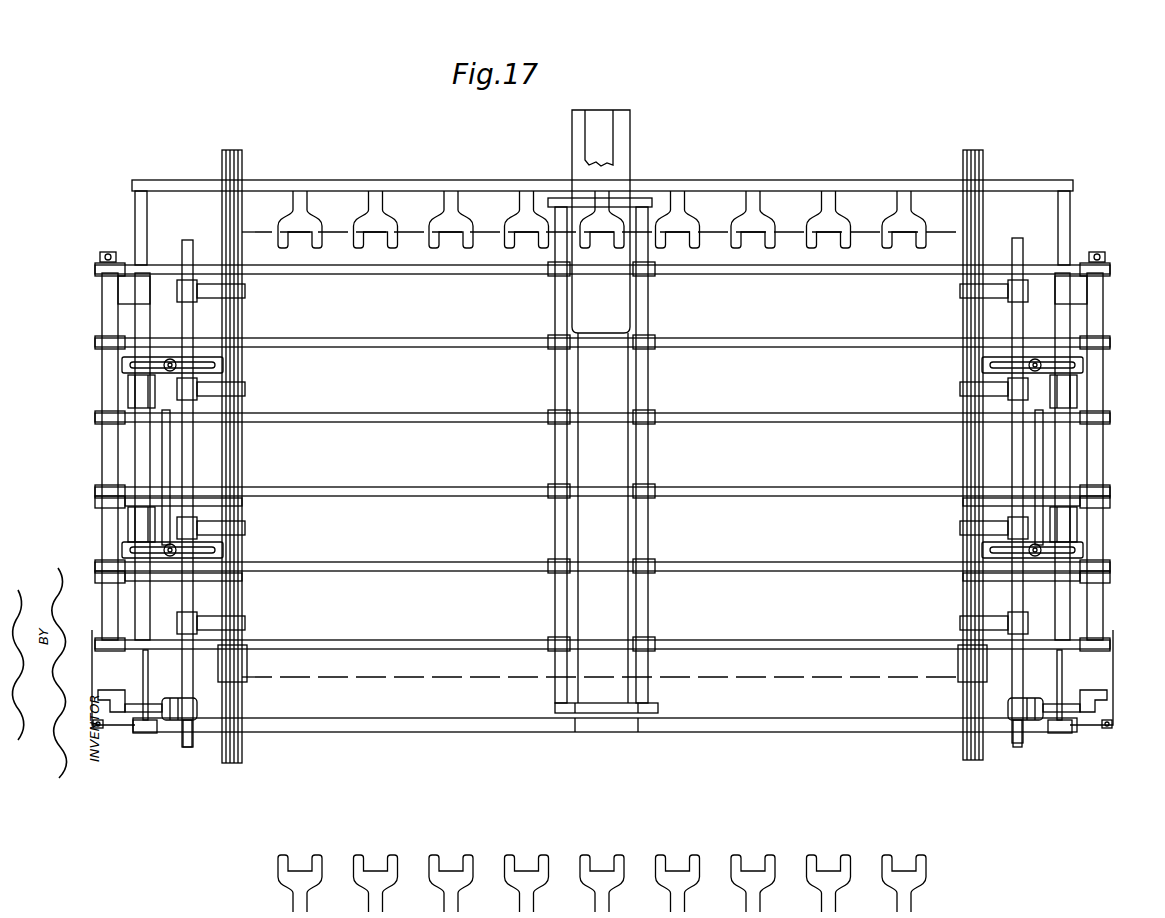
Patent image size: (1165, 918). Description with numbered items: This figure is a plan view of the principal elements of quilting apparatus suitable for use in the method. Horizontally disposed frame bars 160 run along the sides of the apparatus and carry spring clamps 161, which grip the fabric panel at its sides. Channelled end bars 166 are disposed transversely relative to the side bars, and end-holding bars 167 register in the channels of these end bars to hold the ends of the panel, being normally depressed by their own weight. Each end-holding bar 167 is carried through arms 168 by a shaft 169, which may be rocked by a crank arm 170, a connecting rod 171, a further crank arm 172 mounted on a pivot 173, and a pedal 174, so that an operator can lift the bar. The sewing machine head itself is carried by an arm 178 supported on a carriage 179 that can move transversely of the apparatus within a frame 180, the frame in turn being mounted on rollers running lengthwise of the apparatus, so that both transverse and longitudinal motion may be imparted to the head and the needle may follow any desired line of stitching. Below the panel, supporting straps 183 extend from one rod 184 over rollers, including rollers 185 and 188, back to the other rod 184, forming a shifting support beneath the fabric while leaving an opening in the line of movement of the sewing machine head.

The frame bar 160 is at (757, 181).
The spring clamp 161 is at (427, 237).
The channelled end bar 166 is at (242, 160).
The end-holding bar 167 is at (235, 321).
The arm 168 is at (210, 388).
The shaft 169 is at (210, 461).
The crank arm 170 is at (195, 725).
The connecting rod 171 is at (170, 699).
The crank arm 172 is at (128, 699).
The pivot 173 is at (100, 731).
The pedal 174 is at (133, 733).
The arm 178 is at (612, 141).
The carriage 179 is at (597, 283).
The frame 180 is at (592, 715).
The supporting strap 183 is at (433, 275).
The rod 184 is at (652, 394).
The roller 185 is at (95, 266).
The roller 188 is at (1118, 248).